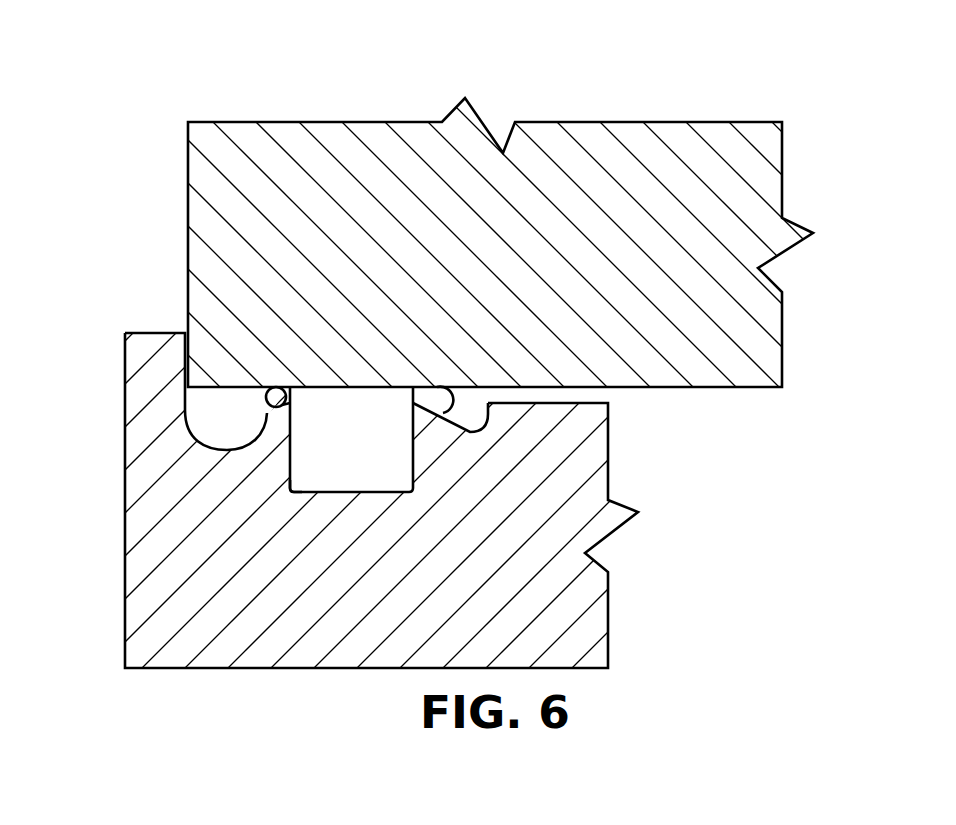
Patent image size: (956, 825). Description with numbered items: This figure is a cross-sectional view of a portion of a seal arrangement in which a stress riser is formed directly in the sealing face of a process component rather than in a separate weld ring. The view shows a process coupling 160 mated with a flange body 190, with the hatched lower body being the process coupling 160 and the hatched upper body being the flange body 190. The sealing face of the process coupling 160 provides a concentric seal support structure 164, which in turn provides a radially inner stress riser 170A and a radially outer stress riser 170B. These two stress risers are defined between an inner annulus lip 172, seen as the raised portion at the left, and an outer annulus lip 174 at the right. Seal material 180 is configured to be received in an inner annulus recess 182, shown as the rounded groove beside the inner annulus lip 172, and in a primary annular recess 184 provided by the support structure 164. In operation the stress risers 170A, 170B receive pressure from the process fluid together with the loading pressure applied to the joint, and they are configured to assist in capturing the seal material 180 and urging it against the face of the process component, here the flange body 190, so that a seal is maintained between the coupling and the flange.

The flange body 190 is at (590, 133).
The process coupling 160 is at (137, 527).
The inner annulus lip 172 is at (143, 333).
The inner annulus recess 182 is at (226, 425).
The radially inner stress riser 170A is at (289, 403).
The radially outer stress riser 170B is at (415, 395).
The outer annulus lip 174 is at (520, 403).
The seal material 180 is at (351, 439).
The primary annular recess 184 is at (291, 494).
The seal support structure 164 is at (448, 481).